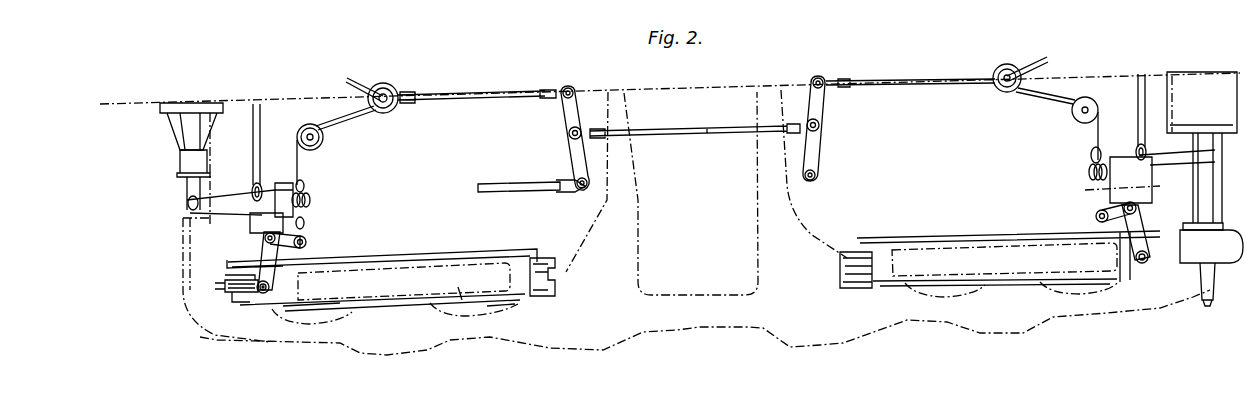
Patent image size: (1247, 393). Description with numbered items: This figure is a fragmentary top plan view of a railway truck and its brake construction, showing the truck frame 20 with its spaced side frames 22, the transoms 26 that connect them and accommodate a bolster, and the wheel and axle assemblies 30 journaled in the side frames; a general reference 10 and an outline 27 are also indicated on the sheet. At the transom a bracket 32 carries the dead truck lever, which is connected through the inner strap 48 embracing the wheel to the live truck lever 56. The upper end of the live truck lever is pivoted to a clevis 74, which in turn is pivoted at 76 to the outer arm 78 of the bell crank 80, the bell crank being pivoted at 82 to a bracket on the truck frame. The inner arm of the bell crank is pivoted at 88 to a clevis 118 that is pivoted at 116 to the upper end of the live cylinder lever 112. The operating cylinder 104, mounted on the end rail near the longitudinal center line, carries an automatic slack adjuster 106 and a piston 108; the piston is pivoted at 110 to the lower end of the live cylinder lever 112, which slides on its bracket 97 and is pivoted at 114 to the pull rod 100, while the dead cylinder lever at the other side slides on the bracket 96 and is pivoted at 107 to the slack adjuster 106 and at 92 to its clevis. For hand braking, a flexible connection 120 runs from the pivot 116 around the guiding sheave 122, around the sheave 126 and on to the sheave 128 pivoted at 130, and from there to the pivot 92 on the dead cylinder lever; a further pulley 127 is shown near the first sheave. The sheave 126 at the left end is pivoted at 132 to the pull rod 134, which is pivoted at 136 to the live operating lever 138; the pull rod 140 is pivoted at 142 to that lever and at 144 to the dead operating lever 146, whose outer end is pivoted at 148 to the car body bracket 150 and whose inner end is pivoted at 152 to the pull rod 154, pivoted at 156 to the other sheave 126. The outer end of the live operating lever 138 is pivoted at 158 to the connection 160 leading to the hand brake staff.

The bed 10 is at (313, 303).
The truck frame 20 is at (512, 327).
The side frames 22 is at (686, 317).
The transoms 26 is at (618, 145).
The frame 27 is at (190, 252).
The wheel and axle assemblies 30 is at (458, 287).
The bracket 32 is at (553, 280).
The inner strap 48 is at (400, 257).
The live truck lever 56 is at (240, 286).
The clevis 74 is at (247, 290).
The pivotal connection 76 is at (270, 283).
The outer arm 78 is at (262, 242).
The bell crank 80 is at (262, 244).
The pivotal connection 82 is at (248, 236).
The pivotal connection 88 is at (303, 236).
The pivotal connection 92 is at (1093, 177).
The bracket 96 is at (1117, 157).
The bracket 97 is at (300, 186).
The pull rod 100 is at (267, 88).
The operating cylinder 104 is at (163, 122).
The automatic slack adjuster 106 is at (1192, 212).
The pivotal connection 107 is at (1145, 152).
The piston 108 is at (190, 158).
The pivotal connection 110 is at (190, 199).
The live cylinder lever 112 is at (223, 194).
The pivotal connection 114 is at (265, 170).
The pivotal connection 116 is at (313, 192).
The clevis 118 is at (317, 217).
The flexible connection 120 is at (390, 113).
The guiding sheave 122 is at (318, 130).
The sheave 126 is at (412, 53).
The pulley 127 is at (312, 122).
The sheave 128 is at (1077, 120).
The pivotal connection 130 is at (1092, 102).
The pivotal connection 132 is at (395, 93).
The pull rod 134 is at (488, 90).
The pivotal connection 136 is at (589, 62).
The live operating lever 138 is at (577, 118).
The pull rod 140 is at (708, 134).
The pivotal connection 142 is at (564, 138).
The pivotal connection 144 is at (825, 122).
The dead operating lever 146 is at (826, 146).
The pivotal connection 148 is at (820, 173).
The bracket 150 is at (815, 187).
The pivotal connection 152 is at (821, 79).
The pull rod 154 is at (874, 79).
The pivotal connection 156 is at (1005, 65).
The pivotal connection 158 is at (581, 192).
The connection 160 is at (493, 188).